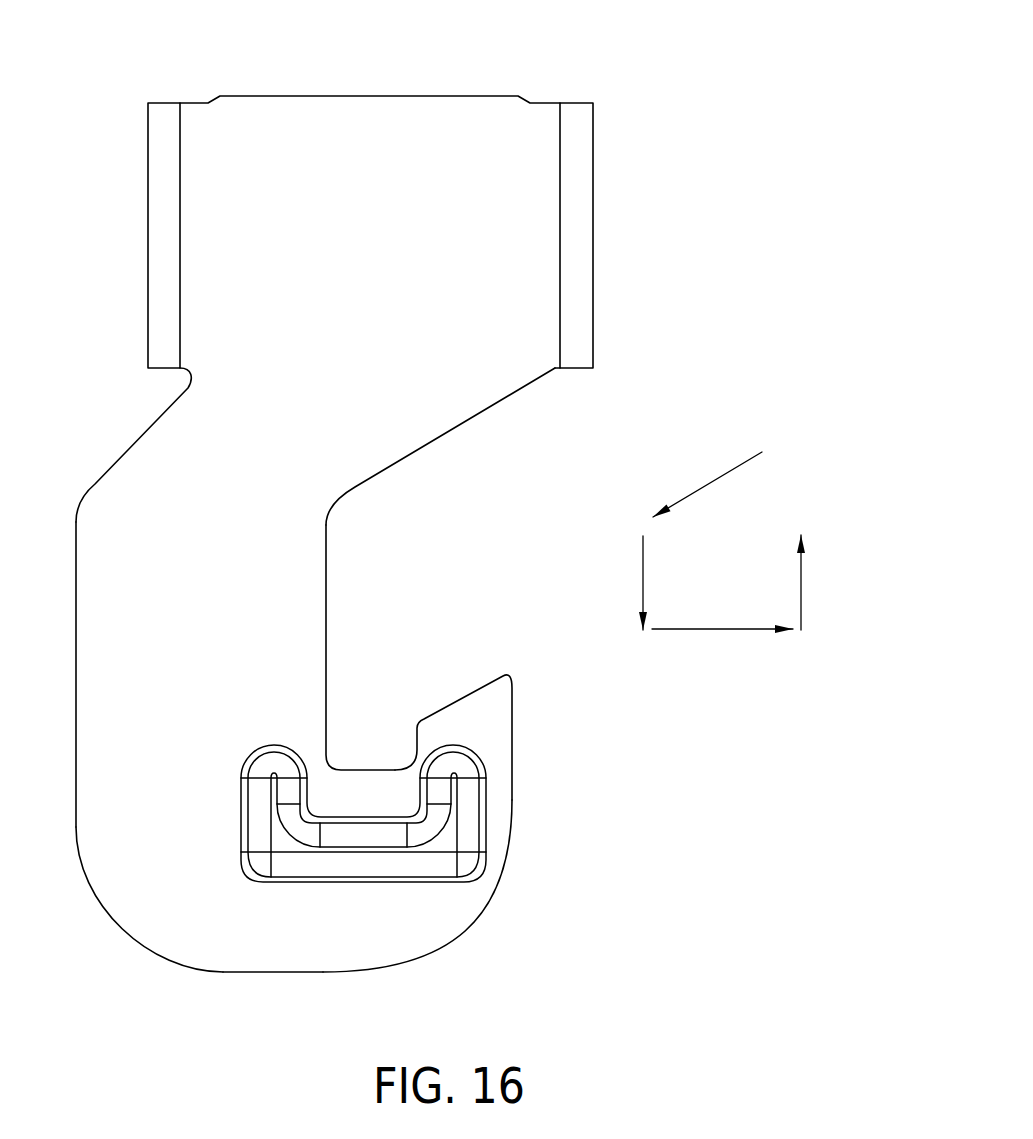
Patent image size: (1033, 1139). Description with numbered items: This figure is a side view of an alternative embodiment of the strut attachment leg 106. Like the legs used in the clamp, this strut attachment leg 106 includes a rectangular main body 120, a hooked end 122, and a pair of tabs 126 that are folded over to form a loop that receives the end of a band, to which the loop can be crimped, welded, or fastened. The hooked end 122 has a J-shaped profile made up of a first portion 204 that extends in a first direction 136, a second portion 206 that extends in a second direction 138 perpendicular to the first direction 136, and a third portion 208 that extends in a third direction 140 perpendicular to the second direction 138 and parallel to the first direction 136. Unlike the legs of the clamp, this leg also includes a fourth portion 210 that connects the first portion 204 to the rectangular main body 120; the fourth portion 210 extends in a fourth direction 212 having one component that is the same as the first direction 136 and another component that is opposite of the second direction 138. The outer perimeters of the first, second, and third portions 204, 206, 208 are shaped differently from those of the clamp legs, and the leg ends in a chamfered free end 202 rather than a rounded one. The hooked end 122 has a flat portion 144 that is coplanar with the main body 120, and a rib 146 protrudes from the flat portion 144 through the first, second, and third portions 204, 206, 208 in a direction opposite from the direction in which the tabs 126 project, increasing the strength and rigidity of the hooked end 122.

The strut attachment leg 106 is at (618, 78).
The rectangular main body 120 is at (362, 237).
The tabs 126 is at (165, 243).
The fourth portion 210 is at (268, 443).
The first portion 204 is at (227, 630).
The chamfered free end 202 is at (460, 698).
The second portion 206 is at (303, 950).
The hooked end 122 is at (225, 973).
The flat portion 144 is at (165, 857).
The third portion 208 is at (498, 777).
The rib 146 is at (430, 865).
The fourth direction 212 is at (717, 477).
The first direction 136 is at (643, 572).
The second direction 138 is at (712, 631).
The third direction 140 is at (803, 593).